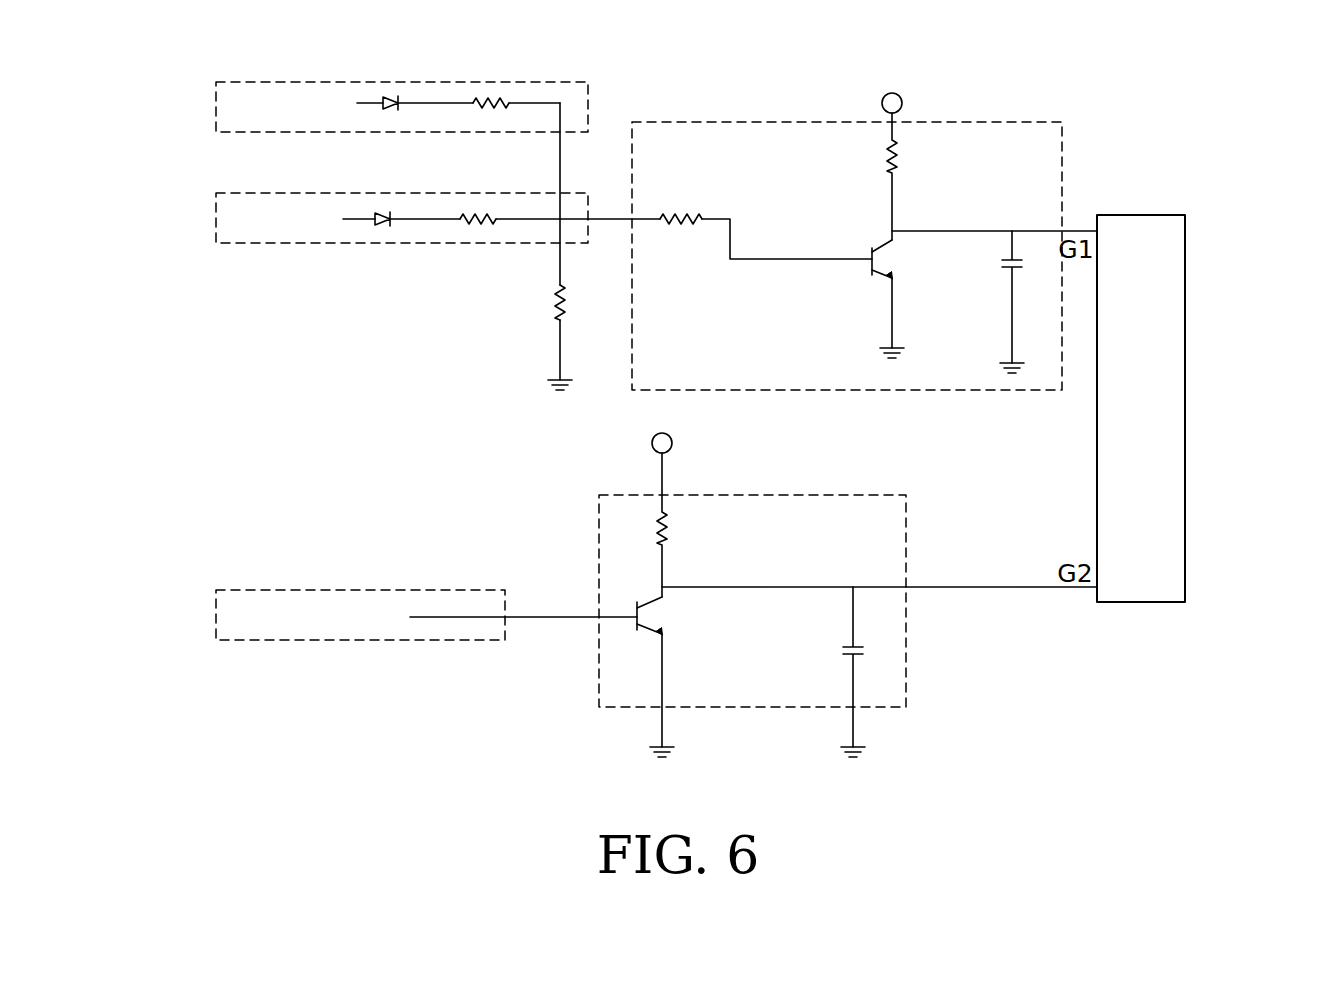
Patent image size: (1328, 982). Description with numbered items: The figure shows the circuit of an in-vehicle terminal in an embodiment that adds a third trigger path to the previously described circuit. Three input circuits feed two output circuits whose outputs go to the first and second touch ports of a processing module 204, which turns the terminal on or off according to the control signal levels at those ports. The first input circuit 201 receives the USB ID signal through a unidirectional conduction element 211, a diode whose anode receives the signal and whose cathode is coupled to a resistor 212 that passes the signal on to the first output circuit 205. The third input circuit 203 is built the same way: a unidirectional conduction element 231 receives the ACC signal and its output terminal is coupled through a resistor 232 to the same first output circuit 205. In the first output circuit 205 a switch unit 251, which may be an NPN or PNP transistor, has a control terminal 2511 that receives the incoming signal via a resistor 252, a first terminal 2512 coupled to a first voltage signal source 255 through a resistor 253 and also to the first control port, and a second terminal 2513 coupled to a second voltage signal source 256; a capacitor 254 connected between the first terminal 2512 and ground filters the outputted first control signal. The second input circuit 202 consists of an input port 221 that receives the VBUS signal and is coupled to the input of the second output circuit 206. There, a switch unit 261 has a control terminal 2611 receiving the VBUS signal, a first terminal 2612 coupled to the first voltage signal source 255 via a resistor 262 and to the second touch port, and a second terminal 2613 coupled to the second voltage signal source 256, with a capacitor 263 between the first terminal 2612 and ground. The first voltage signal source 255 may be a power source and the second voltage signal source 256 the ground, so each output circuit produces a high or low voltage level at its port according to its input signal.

The first input circuit 201 is at (216, 200).
The second input circuit 202 is at (216, 598).
The third input circuit 203 is at (216, 90).
The processing module 204 is at (1187, 333).
The first output circuit 205 is at (940, 122).
The second output circuit 206 is at (765, 495).
The unidirectional conduction element 211 is at (345, 219).
The resistor 212 is at (458, 220).
The input port 221 is at (428, 619).
The unidirectional conduction element 231 is at (357, 104).
The resistor 232 is at (470, 104).
The switch unit 251 is at (873, 281).
The control terminal 2511 is at (870, 252).
The first terminal 2512 is at (898, 236).
The second terminal 2513 is at (895, 282).
The resistor 252 is at (688, 205).
The resistor 253 is at (900, 170).
The capacitor 254 is at (1017, 270).
The first voltage signal source 255 is at (892, 93).
The second voltage signal source 256 is at (890, 358).
The switch unit 261 is at (634, 661).
The control terminal 2611 is at (635, 614).
The first terminal 2612 is at (648, 602).
The second terminal 2613 is at (656, 630).
The resistor 262 is at (668, 530).
The capacitor 263 is at (853, 665).